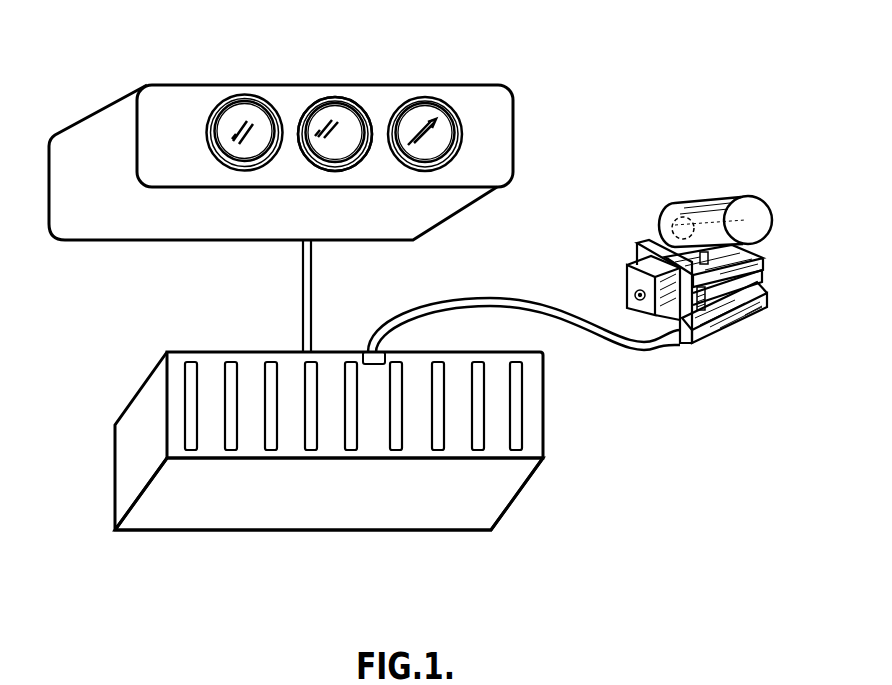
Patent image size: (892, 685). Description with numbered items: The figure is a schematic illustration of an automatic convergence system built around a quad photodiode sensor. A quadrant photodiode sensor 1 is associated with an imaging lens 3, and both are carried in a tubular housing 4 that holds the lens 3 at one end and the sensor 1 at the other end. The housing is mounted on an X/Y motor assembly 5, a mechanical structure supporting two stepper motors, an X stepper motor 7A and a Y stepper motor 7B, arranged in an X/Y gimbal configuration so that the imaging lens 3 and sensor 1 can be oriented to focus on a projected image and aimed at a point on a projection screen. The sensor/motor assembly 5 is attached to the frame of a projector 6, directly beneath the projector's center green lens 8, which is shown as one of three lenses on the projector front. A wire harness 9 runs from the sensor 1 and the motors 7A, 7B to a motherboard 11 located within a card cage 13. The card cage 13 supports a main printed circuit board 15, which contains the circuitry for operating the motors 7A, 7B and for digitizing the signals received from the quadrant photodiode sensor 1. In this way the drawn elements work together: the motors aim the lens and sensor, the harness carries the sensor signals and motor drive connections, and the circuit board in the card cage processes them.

The quadrant photodiode sensor 1 is at (673, 220).
The imaging lens 3 is at (764, 183).
The tubular housing 4 is at (707, 220).
The X/Y motor assembly 5 is at (735, 336).
The projector 6 is at (475, 84).
The X stepper motor 7A is at (742, 283).
The Y stepper motor 7B is at (619, 263).
The center (green) lens 8 is at (327, 113).
The wire harness 9 is at (643, 357).
The motherboard 11 is at (235, 342).
The card cage 13 is at (189, 543).
The main printed circuit board 15 is at (338, 515).